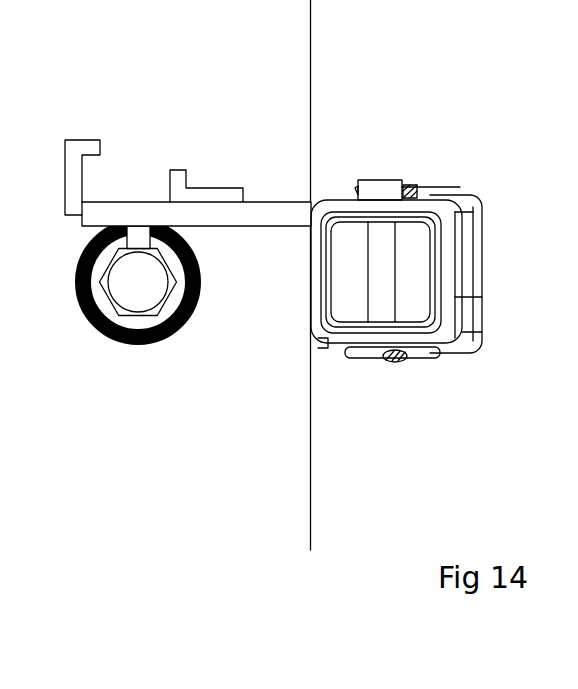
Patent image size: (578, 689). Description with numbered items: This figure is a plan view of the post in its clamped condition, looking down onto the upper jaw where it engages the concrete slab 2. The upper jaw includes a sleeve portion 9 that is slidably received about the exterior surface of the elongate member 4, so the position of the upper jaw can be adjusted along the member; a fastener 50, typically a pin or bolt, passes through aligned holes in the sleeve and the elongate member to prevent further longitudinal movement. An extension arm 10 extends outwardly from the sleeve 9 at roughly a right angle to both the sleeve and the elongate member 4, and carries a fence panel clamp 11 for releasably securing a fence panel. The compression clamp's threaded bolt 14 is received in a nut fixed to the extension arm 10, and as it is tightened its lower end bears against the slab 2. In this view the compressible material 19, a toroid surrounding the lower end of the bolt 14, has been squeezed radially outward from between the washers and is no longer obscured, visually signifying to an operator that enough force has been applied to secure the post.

The concrete slab 2 is at (382, 85).
The elongate member 4 is at (430, 252).
The sleeve portion 9 is at (325, 343).
The extension arm 10 is at (257, 210).
The fence panel clamp 11 is at (87, 148).
The threaded bolt 14 is at (135, 288).
The compressible material 19 is at (95, 330).
The fastener 50 is at (382, 363).